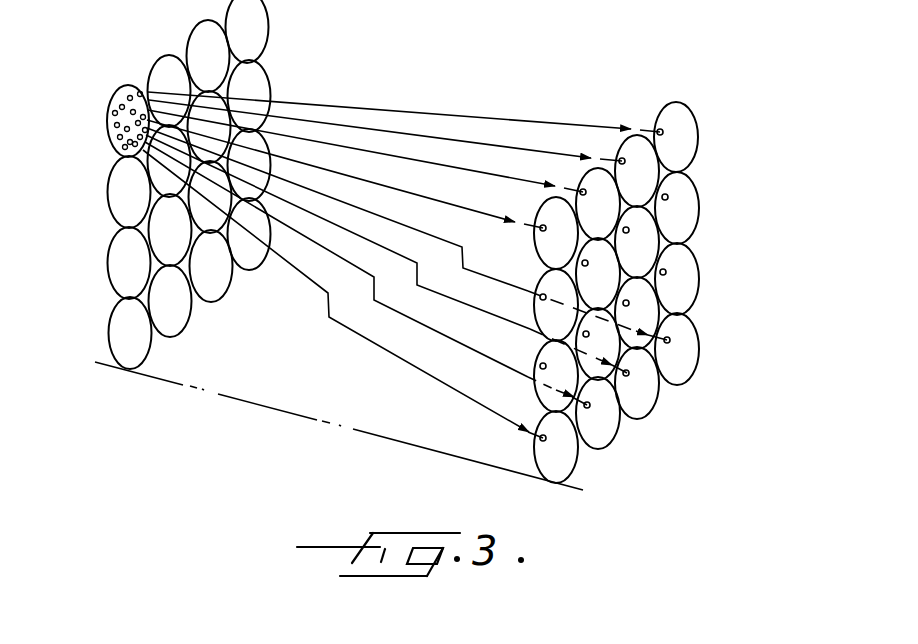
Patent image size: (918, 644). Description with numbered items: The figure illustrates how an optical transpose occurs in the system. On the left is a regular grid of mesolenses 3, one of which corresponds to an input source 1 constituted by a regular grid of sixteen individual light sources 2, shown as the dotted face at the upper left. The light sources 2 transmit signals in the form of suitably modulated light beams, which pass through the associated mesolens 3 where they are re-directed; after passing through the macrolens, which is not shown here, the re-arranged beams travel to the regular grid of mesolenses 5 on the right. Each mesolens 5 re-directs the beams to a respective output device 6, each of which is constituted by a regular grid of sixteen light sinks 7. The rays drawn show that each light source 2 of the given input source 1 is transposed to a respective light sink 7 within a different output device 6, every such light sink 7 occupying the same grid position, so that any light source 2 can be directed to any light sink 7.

The input source 1 is at (104, 155).
The light source 2 is at (120, 98).
The mesolens 3 is at (255, 30).
The mesolens 5 is at (680, 118).
The output device 6 is at (708, 249).
The light sink 7 is at (664, 133).